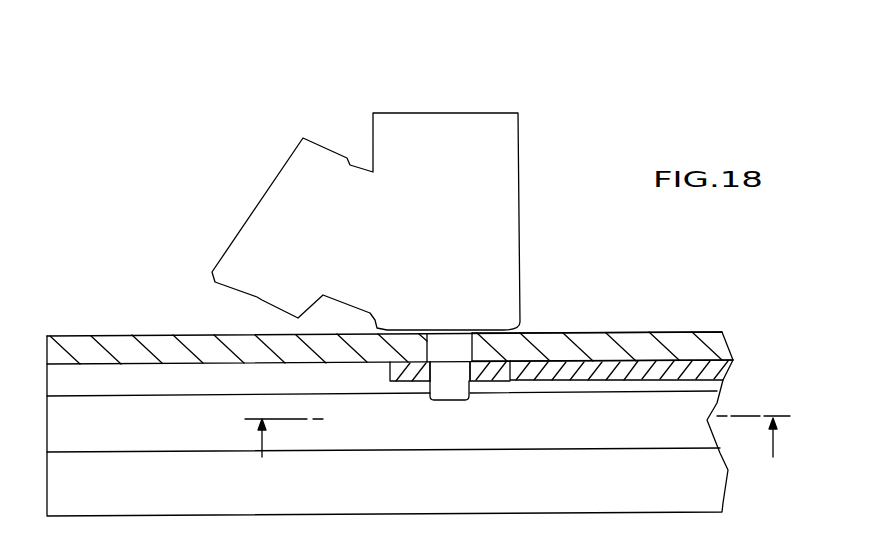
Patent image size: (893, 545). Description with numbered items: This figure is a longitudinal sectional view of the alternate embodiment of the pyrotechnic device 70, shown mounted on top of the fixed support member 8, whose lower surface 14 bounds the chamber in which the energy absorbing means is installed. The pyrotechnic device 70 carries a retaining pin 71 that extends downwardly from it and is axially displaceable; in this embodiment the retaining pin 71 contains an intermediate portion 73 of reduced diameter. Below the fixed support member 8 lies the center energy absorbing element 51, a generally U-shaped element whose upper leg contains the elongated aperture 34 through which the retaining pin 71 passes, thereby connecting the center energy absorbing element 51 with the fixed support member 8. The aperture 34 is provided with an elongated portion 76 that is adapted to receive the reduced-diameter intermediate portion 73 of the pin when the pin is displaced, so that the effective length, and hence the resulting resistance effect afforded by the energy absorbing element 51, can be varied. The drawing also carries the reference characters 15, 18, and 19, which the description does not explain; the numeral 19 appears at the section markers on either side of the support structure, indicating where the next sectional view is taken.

The fixed support member 8 is at (662, 328).
The lower surface 14 is at (138, 365).
The top plate 15 is at (117, 336).
The right clamp member 18 is at (490, 368).
The section line 19 is at (517, 452).
The elongated aperture 34 is at (423, 377).
The center energy absorbing element 51 is at (712, 370).
The pyrotechnic device 70 is at (260, 183).
The retaining pin 71 is at (453, 345).
The intermediate portion of reduced diameter 73 is at (449, 396).
The elongated portion 76 is at (484, 370).